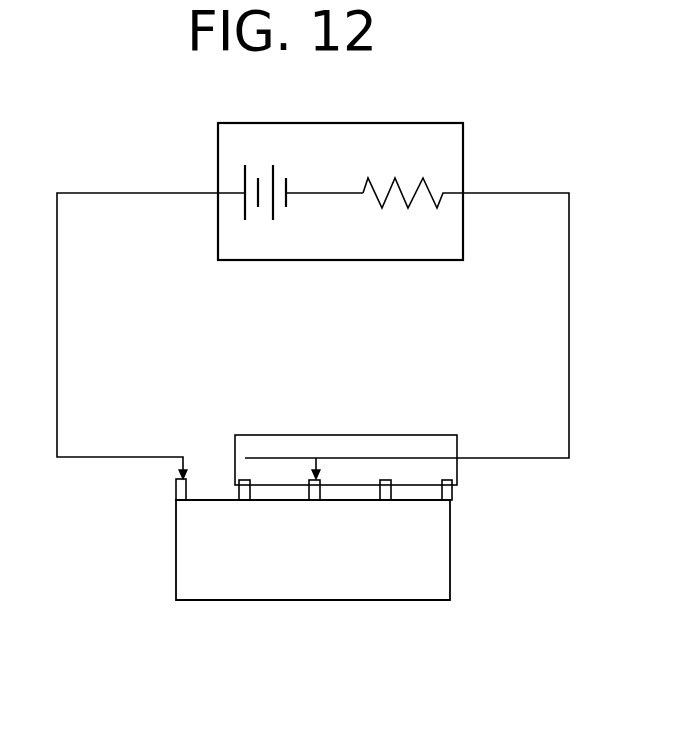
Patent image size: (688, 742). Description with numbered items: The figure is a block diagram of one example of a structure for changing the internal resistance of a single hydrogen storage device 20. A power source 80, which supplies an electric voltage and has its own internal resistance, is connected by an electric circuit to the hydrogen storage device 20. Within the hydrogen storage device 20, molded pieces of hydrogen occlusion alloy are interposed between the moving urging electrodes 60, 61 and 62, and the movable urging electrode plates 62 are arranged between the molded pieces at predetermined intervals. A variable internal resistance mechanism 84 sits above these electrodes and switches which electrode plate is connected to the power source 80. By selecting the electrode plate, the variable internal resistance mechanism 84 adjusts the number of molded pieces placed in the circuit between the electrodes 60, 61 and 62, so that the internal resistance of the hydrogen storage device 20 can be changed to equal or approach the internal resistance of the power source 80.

The power source 80 is at (403, 123).
The variable internal resistance mechanism 84 is at (370, 435).
The moving urging electrode 61 is at (175, 488).
The movable urging electrode plates 62 is at (243, 500).
The moving urging electrode 60 is at (452, 492).
The hydrogen storage device 20 is at (343, 590).